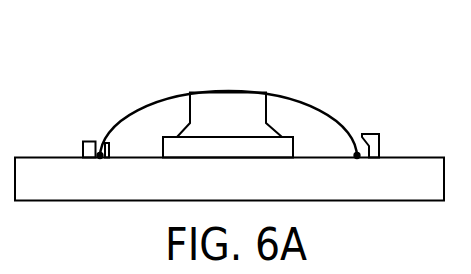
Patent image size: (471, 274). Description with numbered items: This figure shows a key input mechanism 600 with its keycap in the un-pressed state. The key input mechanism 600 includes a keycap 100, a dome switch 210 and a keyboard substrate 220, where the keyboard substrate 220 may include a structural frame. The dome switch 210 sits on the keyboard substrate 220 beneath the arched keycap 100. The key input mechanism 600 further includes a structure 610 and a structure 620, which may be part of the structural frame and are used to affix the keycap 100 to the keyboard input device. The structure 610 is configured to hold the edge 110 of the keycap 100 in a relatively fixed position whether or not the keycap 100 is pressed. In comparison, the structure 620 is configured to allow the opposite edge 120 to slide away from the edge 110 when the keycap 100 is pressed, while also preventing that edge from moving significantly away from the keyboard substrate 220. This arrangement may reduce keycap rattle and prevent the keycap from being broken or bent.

The key input mechanism 600 is at (298, 58).
The keycap 100 is at (152, 104).
The edge 110 is at (99, 158).
The edge 120 is at (356, 159).
The dome switch 210 is at (267, 112).
The keyboard substrate 220 is at (428, 192).
The structure 610 is at (89, 140).
The structure 620 is at (370, 133).